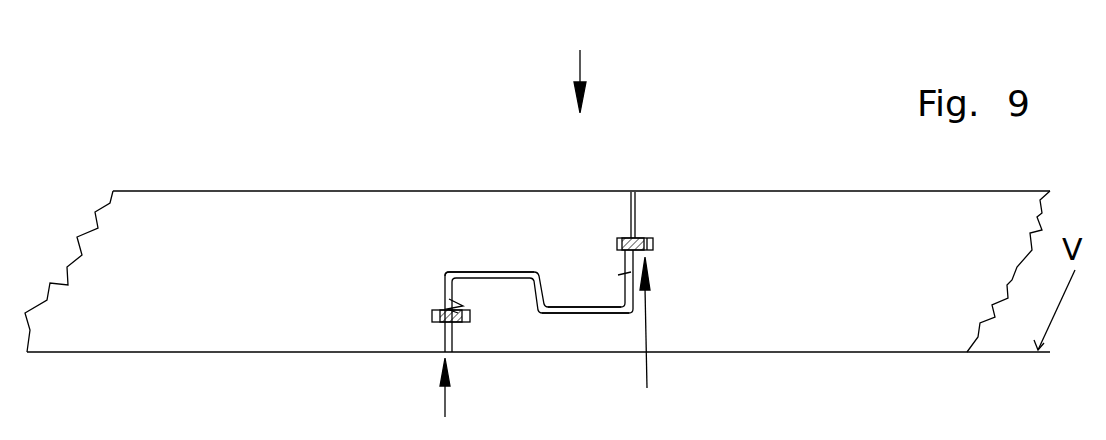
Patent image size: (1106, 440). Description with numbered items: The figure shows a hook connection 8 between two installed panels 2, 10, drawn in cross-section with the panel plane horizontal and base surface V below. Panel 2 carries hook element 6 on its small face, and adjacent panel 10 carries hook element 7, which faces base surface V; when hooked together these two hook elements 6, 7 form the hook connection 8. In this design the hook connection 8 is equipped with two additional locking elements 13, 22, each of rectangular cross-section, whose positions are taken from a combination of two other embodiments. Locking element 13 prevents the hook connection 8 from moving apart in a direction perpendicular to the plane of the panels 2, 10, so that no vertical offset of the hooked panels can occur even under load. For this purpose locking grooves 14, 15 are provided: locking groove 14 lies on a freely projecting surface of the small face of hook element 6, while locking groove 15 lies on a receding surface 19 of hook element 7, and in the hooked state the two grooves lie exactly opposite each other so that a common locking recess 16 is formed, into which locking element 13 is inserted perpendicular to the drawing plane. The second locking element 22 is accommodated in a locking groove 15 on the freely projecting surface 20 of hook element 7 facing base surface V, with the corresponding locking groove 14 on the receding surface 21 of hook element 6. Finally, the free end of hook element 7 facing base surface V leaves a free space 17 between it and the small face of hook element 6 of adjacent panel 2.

The panel 2 is at (215, 268).
The panel 10 is at (936, 272).
The hook element 6 is at (572, 292).
The hook element 7 is at (570, 344).
The hook connection 8 is at (577, 229).
The locking element 13 is at (643, 250).
The locking groove 14 is at (617, 238).
The locking groove 15 is at (653, 243).
The locking recess 16 is at (654, 344).
The free space 17 is at (445, 399).
The receding surface 19 is at (630, 273).
The freely projecting surface 20 is at (447, 288).
The receding surface 21 is at (449, 299).
The locking element 22 is at (457, 330).